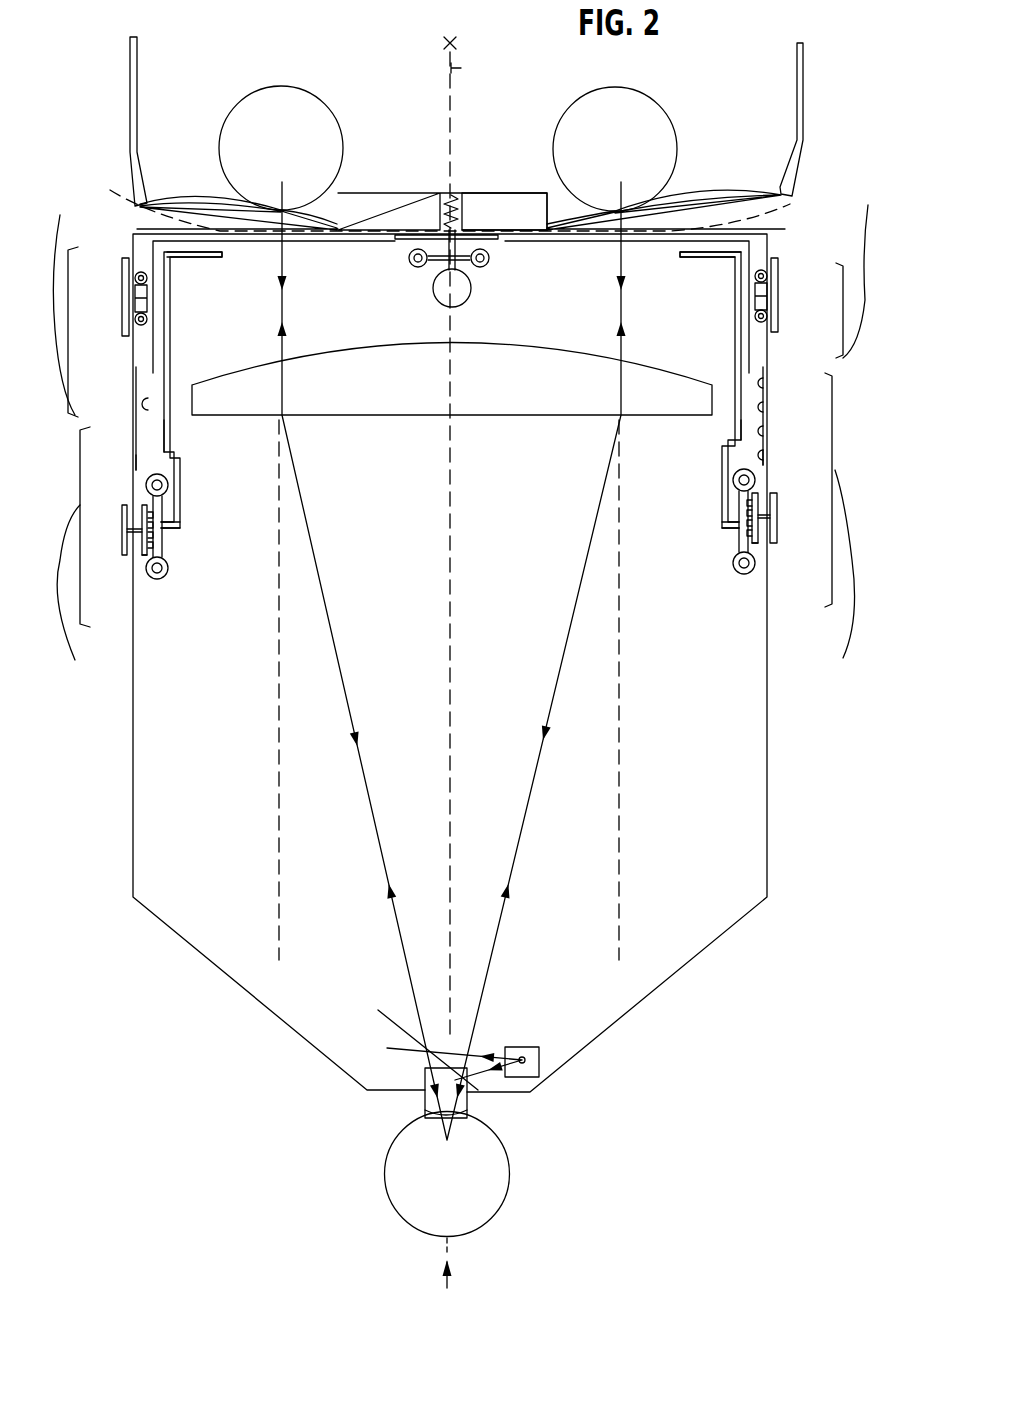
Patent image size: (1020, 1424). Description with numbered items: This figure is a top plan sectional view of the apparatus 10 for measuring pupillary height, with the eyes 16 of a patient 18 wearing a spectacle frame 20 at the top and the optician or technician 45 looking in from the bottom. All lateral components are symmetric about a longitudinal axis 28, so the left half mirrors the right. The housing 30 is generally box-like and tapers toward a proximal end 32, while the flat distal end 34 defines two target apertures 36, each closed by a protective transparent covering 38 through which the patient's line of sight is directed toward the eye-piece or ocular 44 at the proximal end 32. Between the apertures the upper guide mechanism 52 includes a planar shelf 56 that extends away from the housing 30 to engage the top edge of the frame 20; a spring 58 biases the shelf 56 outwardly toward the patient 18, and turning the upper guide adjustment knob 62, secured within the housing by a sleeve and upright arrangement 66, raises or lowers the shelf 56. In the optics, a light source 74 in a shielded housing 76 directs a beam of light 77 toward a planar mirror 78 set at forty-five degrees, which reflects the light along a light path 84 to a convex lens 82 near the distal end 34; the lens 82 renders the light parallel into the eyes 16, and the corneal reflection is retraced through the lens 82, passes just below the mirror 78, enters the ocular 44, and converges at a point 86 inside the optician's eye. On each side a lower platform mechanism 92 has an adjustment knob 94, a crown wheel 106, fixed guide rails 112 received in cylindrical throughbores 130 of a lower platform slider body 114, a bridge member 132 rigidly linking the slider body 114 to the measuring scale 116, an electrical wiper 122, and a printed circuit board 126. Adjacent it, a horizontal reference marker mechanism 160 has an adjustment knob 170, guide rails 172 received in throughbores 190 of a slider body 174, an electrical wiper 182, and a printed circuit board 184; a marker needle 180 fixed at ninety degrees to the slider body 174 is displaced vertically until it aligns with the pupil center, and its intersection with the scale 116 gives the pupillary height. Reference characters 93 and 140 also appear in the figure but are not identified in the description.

The apparatus 10 is at (97, 788).
The eye 16 is at (318, 106).
The patient 18 is at (275, 42).
The spectacle frame 20 is at (795, 172).
The longitudinal axis 28 is at (461, 68).
The housing 30 is at (145, 832).
The proximal end 32 is at (280, 1103).
The distal end 34 is at (108, 111).
The target apertures 36 is at (445, 202).
The protective transparent covering 38 is at (300, 245).
The eye-piece 44 is at (427, 1103).
The optician 45 is at (503, 1175).
The upper guide mechanism 52 is at (401, 174).
The planar shelf 56 is at (500, 205).
The spring 58 is at (445, 195).
The upper guide adjustment knob 62 is at (440, 300).
The sleeve and upright arrangement 66 is at (410, 262).
The light source 74 is at (527, 1068).
The shielded housing 76 is at (543, 1060).
The beam of light 77 is at (492, 1052).
The planar mirror 78 is at (370, 1030).
The convex lens 82 is at (541, 400).
The light path 84 is at (496, 920).
The convergence point 86 is at (447, 1140).
The lower platform mechanism 92 is at (463, 521).
The adjustment mechanism 93 is at (116, 693).
The adjustment knob 94 is at (122, 542).
The crown wheel 106 is at (142, 556).
The guide rails 112 is at (167, 477).
The lower platform slider body 114 is at (163, 539).
The measuring scale 116 is at (697, 256).
The electrical wiper 122 is at (162, 440).
The printed circuit board 126 is at (138, 465).
The cylindrical throughbores 130 is at (163, 485).
The bridge member 132 is at (180, 525).
The frame member 140 is at (737, 410).
The horizontal reference marker mechanism 160 is at (460, 300).
The adjustment knob 170 is at (120, 302).
The guide rails 172 is at (133, 275).
The slider body 174 is at (164, 320).
The marker needle 180 is at (243, 244).
The electrical wiper 182 is at (138, 393).
The printed circuit board 184 is at (148, 404).
The cylindrical throughbores 190 is at (137, 272).